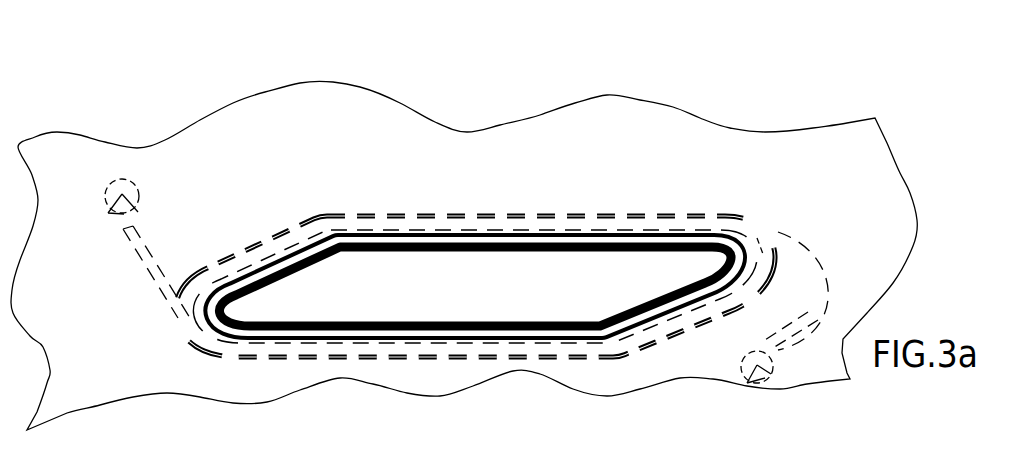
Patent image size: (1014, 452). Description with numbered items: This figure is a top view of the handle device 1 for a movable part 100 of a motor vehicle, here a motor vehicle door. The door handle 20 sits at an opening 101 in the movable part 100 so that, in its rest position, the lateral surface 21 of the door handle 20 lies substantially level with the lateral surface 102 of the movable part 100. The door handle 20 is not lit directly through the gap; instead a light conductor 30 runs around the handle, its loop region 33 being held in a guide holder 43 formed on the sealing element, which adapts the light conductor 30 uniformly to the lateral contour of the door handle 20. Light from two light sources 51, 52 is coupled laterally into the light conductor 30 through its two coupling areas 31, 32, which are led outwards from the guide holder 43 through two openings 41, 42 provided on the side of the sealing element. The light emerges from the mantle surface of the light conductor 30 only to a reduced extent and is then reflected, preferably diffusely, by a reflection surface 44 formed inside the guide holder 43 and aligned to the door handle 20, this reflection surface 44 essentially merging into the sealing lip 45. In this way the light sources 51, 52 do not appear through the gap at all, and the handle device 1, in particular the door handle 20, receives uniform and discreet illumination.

The handle device 1 is at (481, 97).
The door handle 20 is at (478, 234).
The lateral surface of the door handle 21 is at (584, 295).
The light conductor 30 is at (428, 295).
The coupling area 31 is at (823, 283).
The coupling area 32 is at (145, 275).
The loop region 33 is at (668, 224).
The opening 41 is at (185, 338).
The opening 42 is at (762, 221).
The guide holder 43 is at (375, 210).
The reflection surface 44 is at (387, 328).
The sealing lip 45 is at (470, 327).
The light source 51 is at (758, 374).
The light source 52 is at (140, 192).
The movable part 100 is at (787, 143).
The opening 101 is at (320, 228).
The lateral surface of the movable part 102 is at (831, 162).